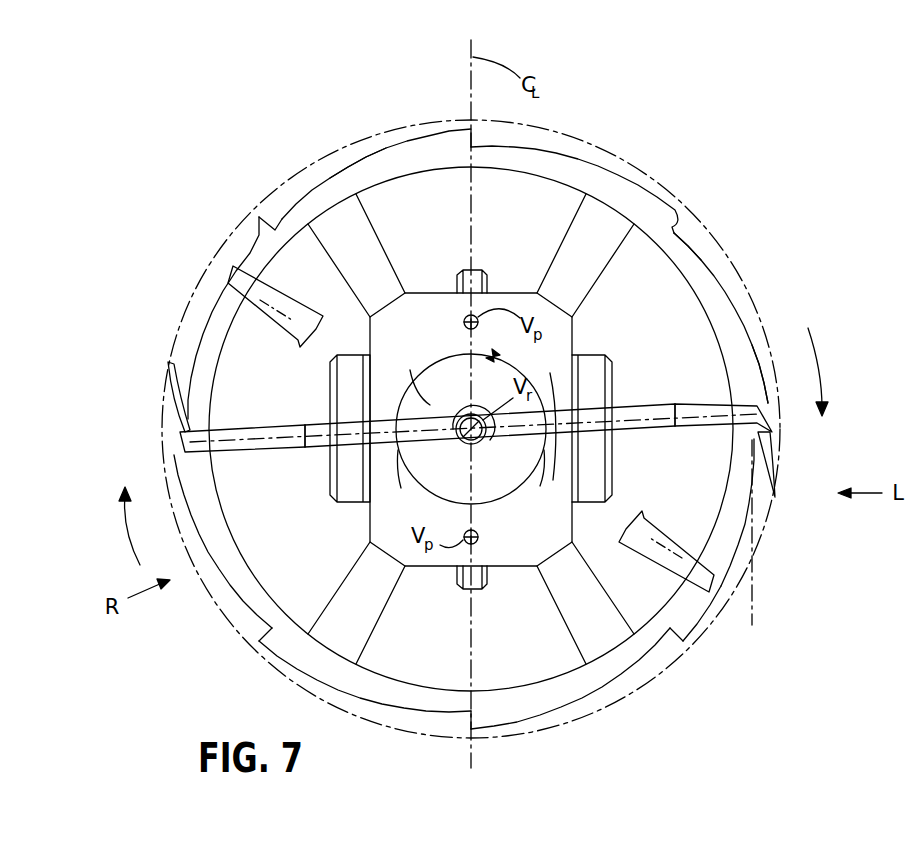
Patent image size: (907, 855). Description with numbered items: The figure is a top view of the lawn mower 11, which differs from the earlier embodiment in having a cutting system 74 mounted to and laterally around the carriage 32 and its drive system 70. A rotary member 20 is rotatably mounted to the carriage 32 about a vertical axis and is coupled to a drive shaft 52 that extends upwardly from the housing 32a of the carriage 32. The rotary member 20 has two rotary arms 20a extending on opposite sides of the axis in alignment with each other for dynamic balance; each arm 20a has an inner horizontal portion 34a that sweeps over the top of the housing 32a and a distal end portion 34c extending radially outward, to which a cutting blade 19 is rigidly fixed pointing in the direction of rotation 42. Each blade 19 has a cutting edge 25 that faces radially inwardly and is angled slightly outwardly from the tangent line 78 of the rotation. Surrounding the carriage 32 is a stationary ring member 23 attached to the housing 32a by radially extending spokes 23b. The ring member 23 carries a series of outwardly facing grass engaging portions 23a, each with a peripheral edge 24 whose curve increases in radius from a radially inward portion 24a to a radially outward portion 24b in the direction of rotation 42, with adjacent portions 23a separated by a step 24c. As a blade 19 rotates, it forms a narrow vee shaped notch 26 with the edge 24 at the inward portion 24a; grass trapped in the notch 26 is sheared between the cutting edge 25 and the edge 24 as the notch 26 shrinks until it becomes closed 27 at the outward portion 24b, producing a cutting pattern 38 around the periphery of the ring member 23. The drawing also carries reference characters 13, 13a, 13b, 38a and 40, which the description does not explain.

The lawn mower 11 is at (707, 94).
The fastening bolt 13 is at (342, 395).
The lower fastening bolt 13a is at (485, 587).
The upper fastening bolt 13b is at (480, 267).
The cutting blade 19 is at (251, 215).
The rotary member 20 is at (512, 458).
The rotary arm 20a is at (530, 480).
The ring member 23 is at (430, 153).
The grass engaging portion 23a is at (388, 167).
The spoke 23b is at (350, 605).
The peripheral edge 24 is at (728, 293).
The radially inward portion 24a is at (687, 242).
The radially outward portion 24b is at (767, 397).
The step 24c is at (702, 220).
The cutting edge 25 is at (752, 462).
The vee shaped notch 26 is at (178, 415).
The closed notch 27 is at (263, 215).
The carriage 32 is at (383, 320).
The housing 32a is at (430, 296).
The inner horizontal portion 34a is at (485, 410).
The distal end portion 34c is at (258, 437).
The cutting pattern 38 is at (637, 696).
The lower right segment edge 38a is at (648, 688).
The rotation direction 40 is at (445, 367).
The direction of rotation 42 is at (820, 367).
The drive shaft 52 is at (480, 413).
The drive system 70 is at (598, 348).
The cutting system 74 is at (150, 407).
The tangent line 78 is at (755, 585).